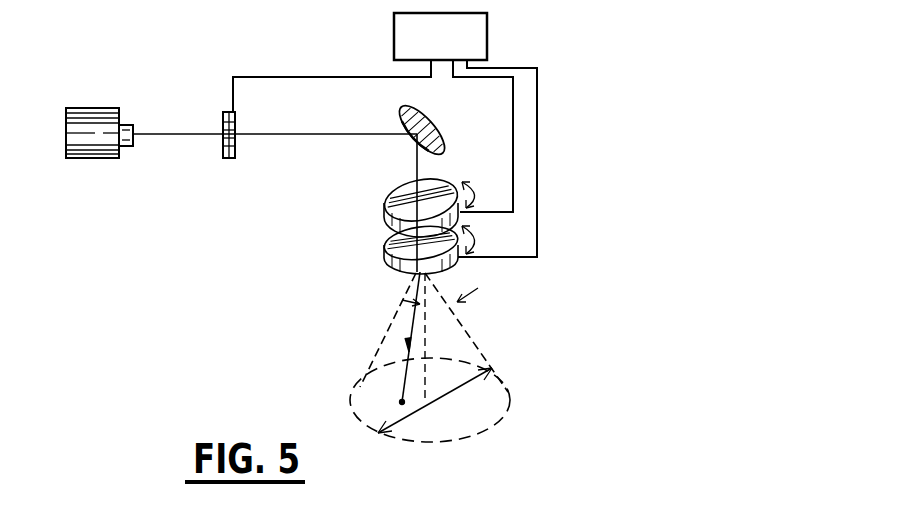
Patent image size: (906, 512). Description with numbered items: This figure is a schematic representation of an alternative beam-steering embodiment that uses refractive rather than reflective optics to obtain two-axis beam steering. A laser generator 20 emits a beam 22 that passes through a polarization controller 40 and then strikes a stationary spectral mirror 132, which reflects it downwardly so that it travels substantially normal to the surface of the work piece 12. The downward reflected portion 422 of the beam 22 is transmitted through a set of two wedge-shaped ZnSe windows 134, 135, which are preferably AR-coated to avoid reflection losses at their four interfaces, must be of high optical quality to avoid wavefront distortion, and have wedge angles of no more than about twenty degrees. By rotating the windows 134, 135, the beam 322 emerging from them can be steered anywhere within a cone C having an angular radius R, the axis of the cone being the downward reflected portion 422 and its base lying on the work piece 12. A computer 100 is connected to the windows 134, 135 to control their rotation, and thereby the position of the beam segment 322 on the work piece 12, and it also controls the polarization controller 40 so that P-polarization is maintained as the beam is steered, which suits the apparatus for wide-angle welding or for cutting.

The laser generator 20 is at (88, 108).
The polarization controller 40 is at (228, 112).
The beam 22 is at (307, 134).
The computer 100 is at (487, 32).
The stationary spectral mirror 132 is at (400, 118).
The downward reflected portion of the beam 422 is at (417, 162).
The wedge-shaped ZnSe window 134 is at (385, 218).
The wedge-shaped ZnSe window 135 is at (385, 255).
The beam emerging from the wedge-shaped windows 322 is at (410, 330).
The cone C is at (487, 358).
The work piece 12 is at (480, 413).